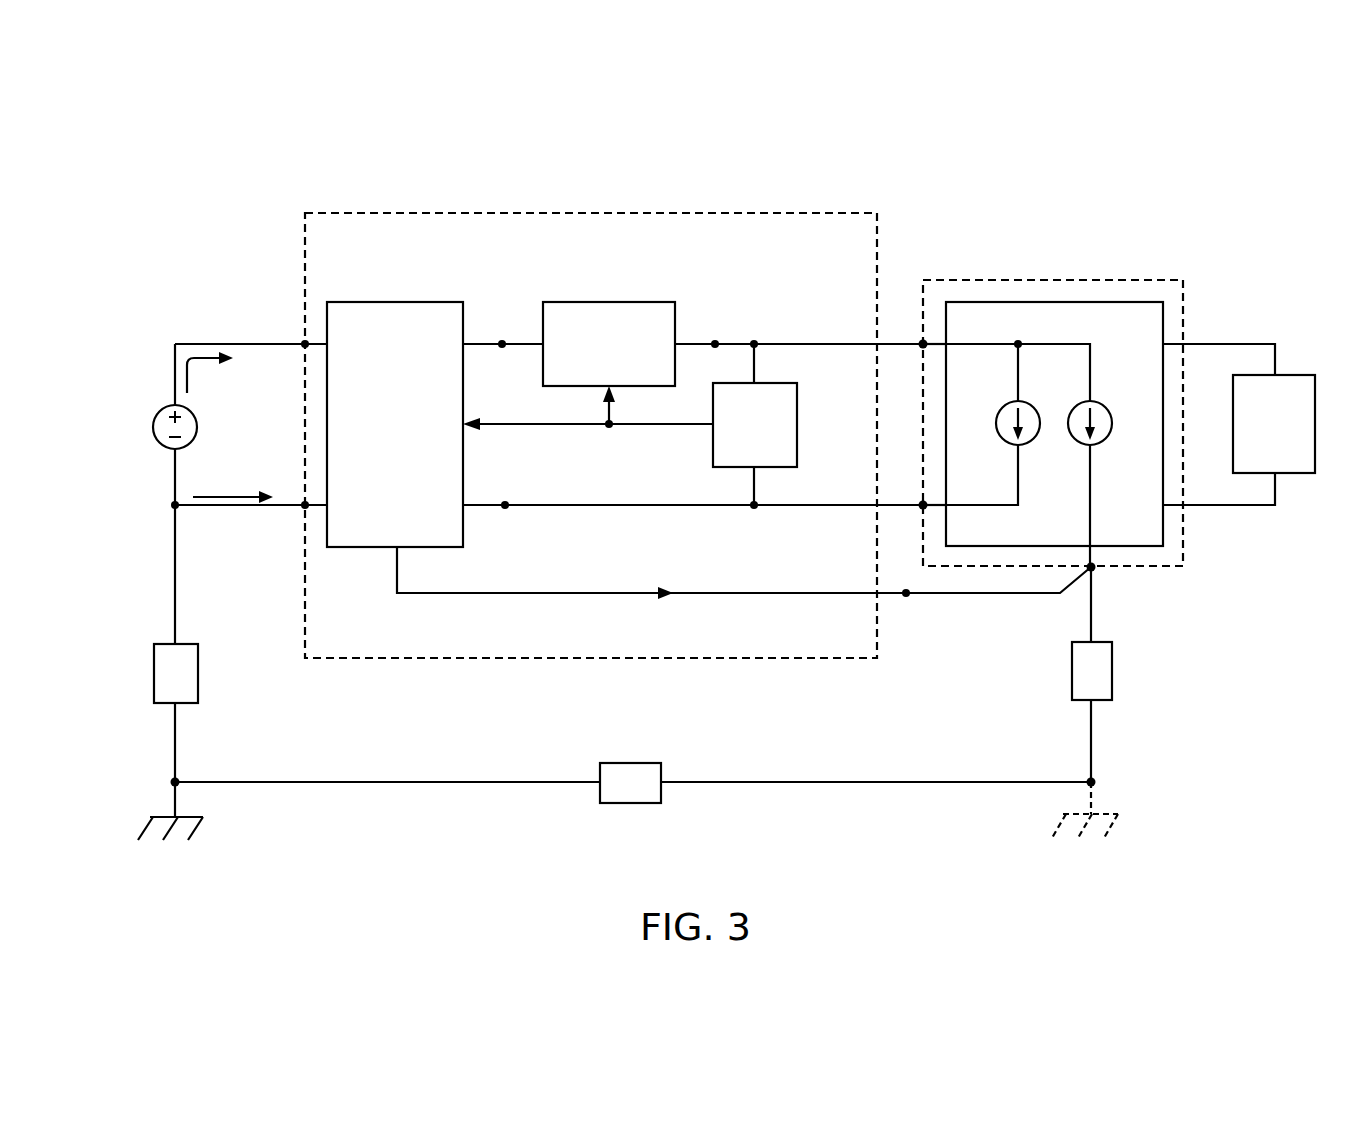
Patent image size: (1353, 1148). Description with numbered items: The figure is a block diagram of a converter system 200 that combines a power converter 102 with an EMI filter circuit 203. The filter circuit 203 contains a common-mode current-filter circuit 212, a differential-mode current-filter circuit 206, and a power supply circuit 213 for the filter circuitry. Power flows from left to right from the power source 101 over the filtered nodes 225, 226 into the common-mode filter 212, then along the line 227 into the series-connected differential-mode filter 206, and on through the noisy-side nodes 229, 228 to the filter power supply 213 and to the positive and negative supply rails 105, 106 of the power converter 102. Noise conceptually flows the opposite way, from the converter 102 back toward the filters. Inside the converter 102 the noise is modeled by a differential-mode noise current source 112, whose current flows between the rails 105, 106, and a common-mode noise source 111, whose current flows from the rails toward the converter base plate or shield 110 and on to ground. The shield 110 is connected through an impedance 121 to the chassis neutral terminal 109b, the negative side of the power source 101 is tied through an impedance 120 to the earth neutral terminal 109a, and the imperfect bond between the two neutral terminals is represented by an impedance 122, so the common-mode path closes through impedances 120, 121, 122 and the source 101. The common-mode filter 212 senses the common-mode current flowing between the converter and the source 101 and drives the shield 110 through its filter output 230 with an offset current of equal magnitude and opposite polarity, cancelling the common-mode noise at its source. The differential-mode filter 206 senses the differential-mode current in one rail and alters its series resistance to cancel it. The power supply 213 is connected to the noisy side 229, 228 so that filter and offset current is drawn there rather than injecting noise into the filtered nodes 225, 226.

The converter system 200 is at (254, 142).
The EMI filter circuit 203 is at (372, 211).
The common-mode current-filter circuit 212 is at (397, 302).
The differential-mode current-filter circuit 206 is at (617, 302).
The power supply circuit 213 is at (797, 424).
The power source 101 is at (153, 428).
The filtered node 225 is at (305, 344).
The filtered node 226 is at (305, 506).
The first output line of communication circuit 227 is at (502, 344).
The noisy-side node 228 is at (505, 505).
The noisy-side node 229 is at (715, 344).
The positive supply rail 105 is at (923, 344).
The negative supply rail 106 is at (923, 505).
The base plate or shield 110 is at (991, 278).
The power converter 102 is at (1073, 302).
The differential-mode noise current source 112 is at (1030, 441).
The common-mode noise source 111 is at (1102, 441).
The filter output 230 is at (906, 594).
The impedance 120 is at (168, 644).
The impedance 121 is at (1112, 672).
The impedance 122 is at (631, 763).
The neutral terminal 109a is at (164, 817).
The neutral terminal 109b is at (1112, 810).